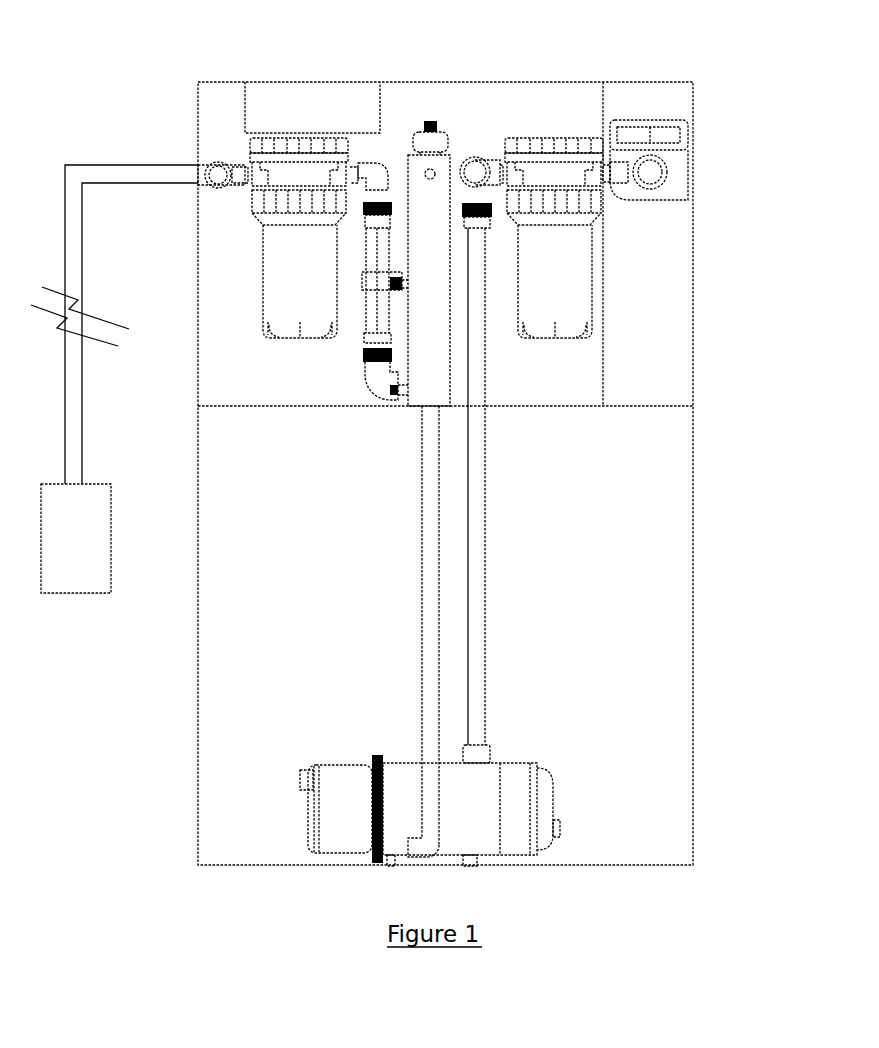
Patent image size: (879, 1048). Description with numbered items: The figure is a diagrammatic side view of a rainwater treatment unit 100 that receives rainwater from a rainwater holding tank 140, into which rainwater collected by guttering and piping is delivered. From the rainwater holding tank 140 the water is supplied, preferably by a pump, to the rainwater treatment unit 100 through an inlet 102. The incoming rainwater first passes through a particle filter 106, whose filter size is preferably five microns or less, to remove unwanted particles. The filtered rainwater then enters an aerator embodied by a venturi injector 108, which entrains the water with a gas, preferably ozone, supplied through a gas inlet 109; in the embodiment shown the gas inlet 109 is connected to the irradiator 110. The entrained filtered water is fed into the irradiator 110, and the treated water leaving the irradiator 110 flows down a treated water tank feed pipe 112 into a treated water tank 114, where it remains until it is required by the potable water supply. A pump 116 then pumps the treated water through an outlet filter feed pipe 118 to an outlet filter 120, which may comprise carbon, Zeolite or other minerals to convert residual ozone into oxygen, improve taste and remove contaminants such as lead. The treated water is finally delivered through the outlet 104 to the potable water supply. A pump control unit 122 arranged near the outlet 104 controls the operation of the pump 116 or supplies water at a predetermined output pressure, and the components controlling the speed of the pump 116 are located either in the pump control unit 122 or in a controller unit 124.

The rainwater treatment unit 100 is at (140, 50).
The inlet 102 is at (225, 170).
The outlet 104 is at (655, 172).
The particle filter 106 is at (263, 223).
The venturi injector 108 is at (365, 300).
The gas inlet 109 is at (365, 368).
The irradiator 110 is at (410, 190).
The treated water tank feed pipe 112 is at (428, 687).
The treated water tank 114 is at (318, 529).
The pump 116 is at (308, 800).
The outlet filter feed pipe 118 is at (479, 535).
The outlet filter 120 is at (568, 138).
The pump control unit 122 is at (655, 117).
The controller unit 124 is at (298, 116).
The rainwater holding tank 140 is at (64, 538).